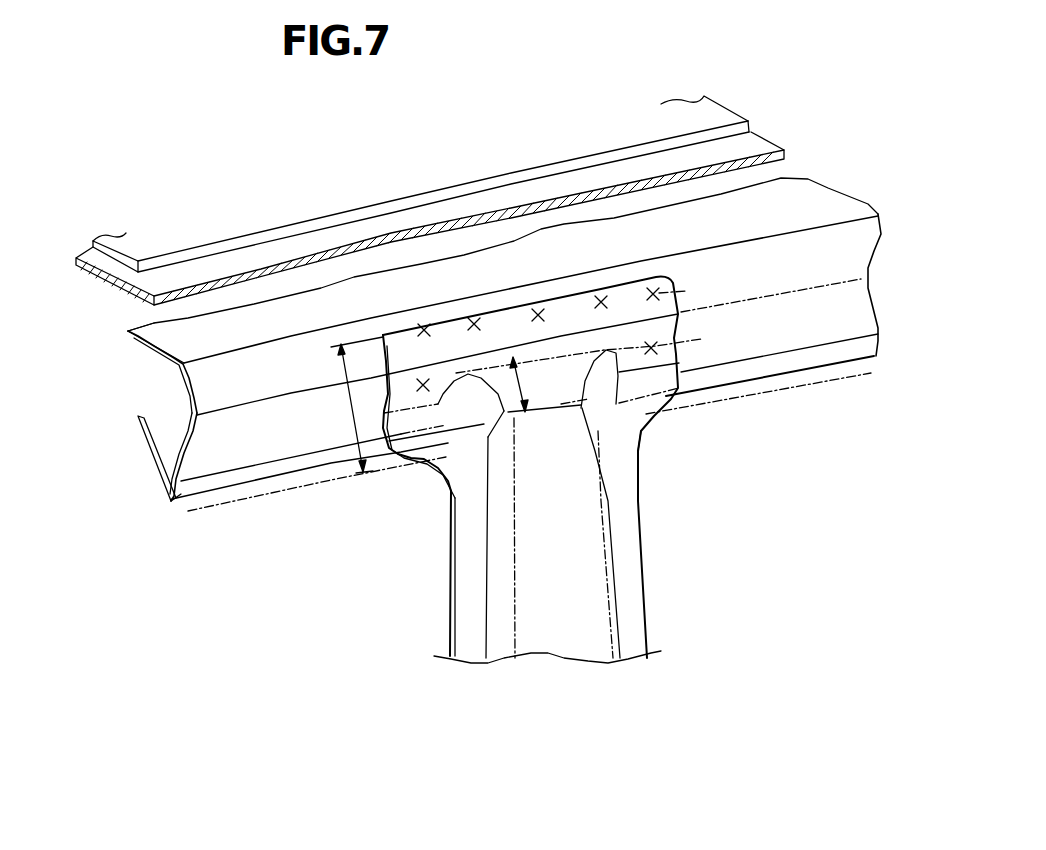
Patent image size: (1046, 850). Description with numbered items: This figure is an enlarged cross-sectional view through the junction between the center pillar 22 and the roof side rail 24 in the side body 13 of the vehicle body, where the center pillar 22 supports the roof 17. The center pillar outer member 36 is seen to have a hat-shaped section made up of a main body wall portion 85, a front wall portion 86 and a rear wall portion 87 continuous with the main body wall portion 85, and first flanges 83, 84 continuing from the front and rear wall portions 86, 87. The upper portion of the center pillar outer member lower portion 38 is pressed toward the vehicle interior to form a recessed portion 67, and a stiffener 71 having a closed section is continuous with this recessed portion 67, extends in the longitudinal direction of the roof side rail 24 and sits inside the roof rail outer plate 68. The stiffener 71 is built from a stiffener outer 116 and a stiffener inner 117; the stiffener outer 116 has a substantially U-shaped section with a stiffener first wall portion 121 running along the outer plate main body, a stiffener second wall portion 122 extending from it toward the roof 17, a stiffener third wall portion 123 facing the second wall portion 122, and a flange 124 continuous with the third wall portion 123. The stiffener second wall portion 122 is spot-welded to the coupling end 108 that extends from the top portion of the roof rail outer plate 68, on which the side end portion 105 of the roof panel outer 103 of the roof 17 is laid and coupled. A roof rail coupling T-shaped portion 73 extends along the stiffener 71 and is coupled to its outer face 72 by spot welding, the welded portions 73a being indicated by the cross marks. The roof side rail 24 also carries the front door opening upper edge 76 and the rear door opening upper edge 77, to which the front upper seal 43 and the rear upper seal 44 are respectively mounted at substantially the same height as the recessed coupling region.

The side body 13 is at (305, 769).
The roof 17 is at (210, 210).
The center pillar 22 is at (506, 680).
The roof side rail 24 is at (195, 325).
The center pillar outer member 36 is at (560, 660).
The center pillar outer member lower portion 38 is at (496, 424).
The front upper seal 43 is at (277, 493).
The rear upper seal 44 is at (765, 392).
The recessed portion 67 is at (512, 357).
The roof rail outer plate 68 is at (298, 247).
The stiffener 71 is at (131, 478).
The outer face 72 is at (807, 297).
The roof rail coupling T-shaped portion 73 is at (340, 400).
The welded portions 73a is at (598, 297).
The front door opening upper edge 76 is at (227, 480).
The rear door opening upper edge 77 is at (833, 355).
The first flange 83 is at (470, 643).
The first flange 84 is at (636, 626).
The main body wall portion 85 is at (597, 627).
The front wall portion 86 is at (500, 647).
The rear wall portion 87 is at (620, 648).
The roof panel outer 103 is at (505, 137).
The side end portion 105 is at (413, 192).
The coupling end 108 is at (427, 227).
The stiffener outer 116 is at (607, 240).
The stiffener inner 117 is at (143, 433).
The stiffener first wall portion 121 is at (207, 380).
The stiffener second wall portion 122 is at (127, 343).
The stiffener third wall portion 123 is at (195, 448).
The flange 124 is at (200, 493).